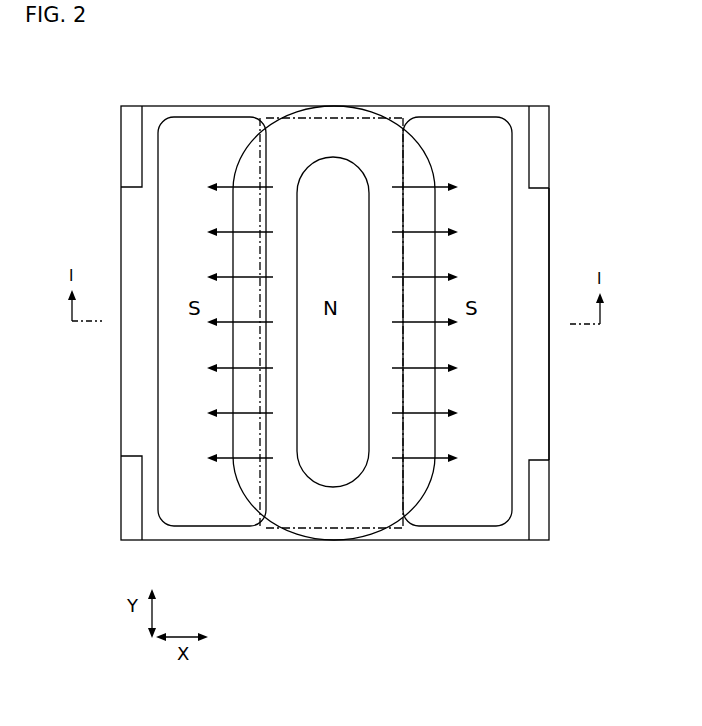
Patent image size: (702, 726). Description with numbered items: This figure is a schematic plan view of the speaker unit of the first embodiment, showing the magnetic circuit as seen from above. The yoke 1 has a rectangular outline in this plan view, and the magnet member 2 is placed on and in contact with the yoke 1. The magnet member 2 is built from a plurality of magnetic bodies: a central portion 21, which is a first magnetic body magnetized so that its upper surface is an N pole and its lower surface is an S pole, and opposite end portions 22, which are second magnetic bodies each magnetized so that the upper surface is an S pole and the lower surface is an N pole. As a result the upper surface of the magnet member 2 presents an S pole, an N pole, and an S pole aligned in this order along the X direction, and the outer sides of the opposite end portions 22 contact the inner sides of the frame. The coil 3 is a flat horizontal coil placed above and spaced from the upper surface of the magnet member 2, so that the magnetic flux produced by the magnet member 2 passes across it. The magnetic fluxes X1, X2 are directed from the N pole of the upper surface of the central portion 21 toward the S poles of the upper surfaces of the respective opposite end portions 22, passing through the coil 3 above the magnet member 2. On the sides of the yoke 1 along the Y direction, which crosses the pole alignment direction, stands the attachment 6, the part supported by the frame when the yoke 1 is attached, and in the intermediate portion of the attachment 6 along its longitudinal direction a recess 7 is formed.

The yoke 1 is at (514, 112).
The magnet member 2 is at (335, 367).
The central portion 21 is at (332, 468).
The opposite end portions 22 is at (222, 497).
The coil 3 is at (327, 135).
The attachment 6 is at (537, 490).
The recess 7 is at (550, 354).
The magnetic flux X1 is at (437, 187).
The magnetic flux X2 is at (233, 187).